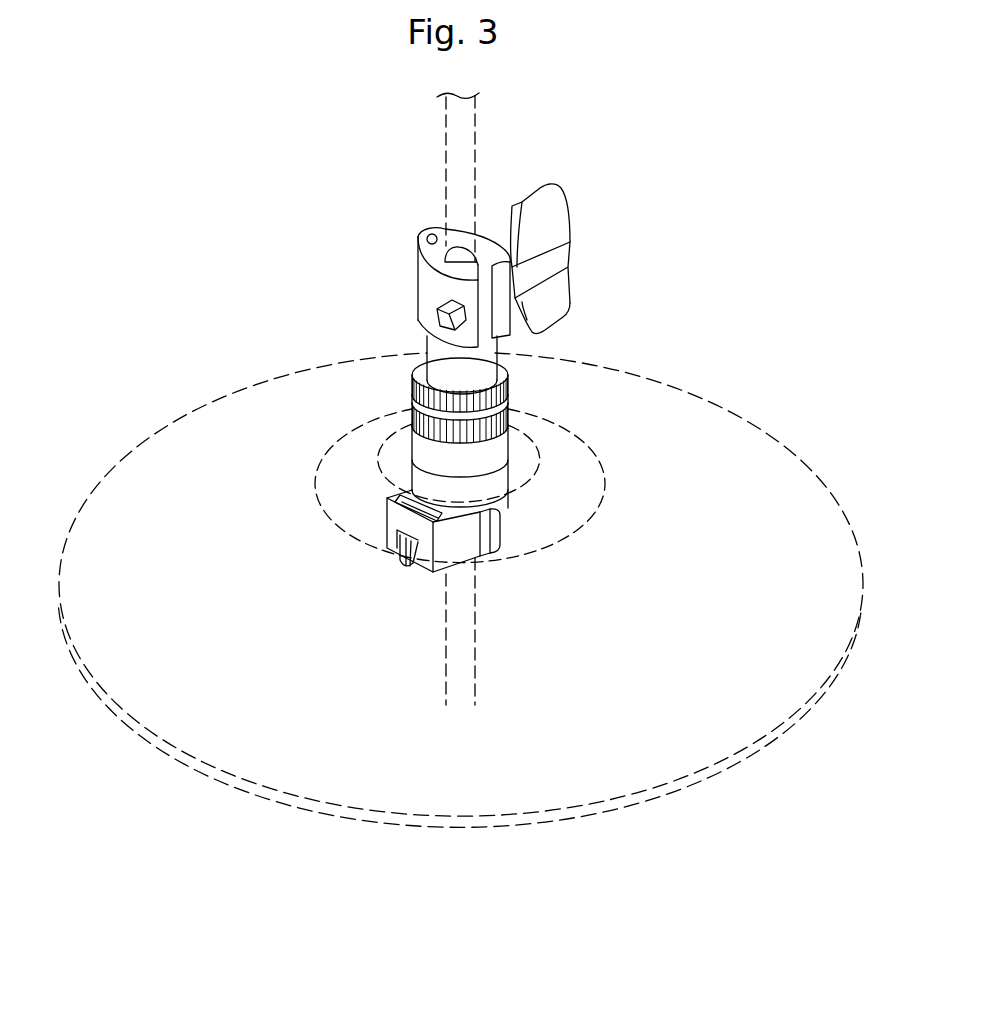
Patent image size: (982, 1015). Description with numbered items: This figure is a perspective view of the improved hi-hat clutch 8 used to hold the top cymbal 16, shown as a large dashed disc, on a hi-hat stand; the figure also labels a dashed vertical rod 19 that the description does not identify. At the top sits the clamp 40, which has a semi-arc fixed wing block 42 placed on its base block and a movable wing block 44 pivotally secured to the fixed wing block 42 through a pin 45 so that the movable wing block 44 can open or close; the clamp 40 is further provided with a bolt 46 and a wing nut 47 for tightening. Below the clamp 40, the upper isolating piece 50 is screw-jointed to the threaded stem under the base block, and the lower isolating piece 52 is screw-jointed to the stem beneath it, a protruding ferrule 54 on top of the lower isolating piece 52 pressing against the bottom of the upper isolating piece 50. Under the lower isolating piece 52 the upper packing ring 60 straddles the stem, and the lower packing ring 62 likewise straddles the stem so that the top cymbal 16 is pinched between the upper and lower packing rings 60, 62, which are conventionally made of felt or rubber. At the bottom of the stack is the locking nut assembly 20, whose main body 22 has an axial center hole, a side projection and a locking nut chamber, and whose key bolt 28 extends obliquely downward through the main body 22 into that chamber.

The hi-hat clutch 8 is at (585, 427).
The top cymbal 16 is at (747, 422).
The pole 19 is at (476, 118).
The locking nut assembly 20 is at (440, 553).
The main body 22 is at (393, 527).
The key bolt 28 is at (407, 570).
The clamp 40 is at (485, 266).
The fixed wing block 42 is at (488, 233).
The movable wing block 44 is at (422, 287).
The pin 45 is at (432, 234).
The bolt 46 is at (437, 320).
The wing nut 47 is at (566, 224).
The upper isolating piece 50 is at (500, 372).
The lower isolating piece 52 is at (508, 412).
The protruding ferrule 54 is at (440, 417).
The upper packing ring 60 is at (502, 440).
The lower packing ring 62 is at (502, 475).